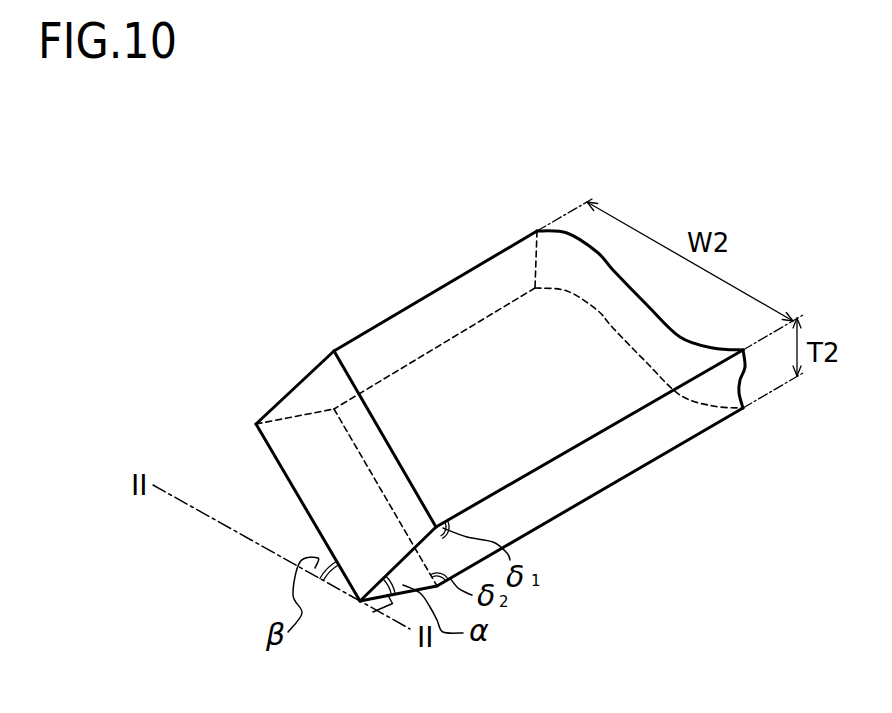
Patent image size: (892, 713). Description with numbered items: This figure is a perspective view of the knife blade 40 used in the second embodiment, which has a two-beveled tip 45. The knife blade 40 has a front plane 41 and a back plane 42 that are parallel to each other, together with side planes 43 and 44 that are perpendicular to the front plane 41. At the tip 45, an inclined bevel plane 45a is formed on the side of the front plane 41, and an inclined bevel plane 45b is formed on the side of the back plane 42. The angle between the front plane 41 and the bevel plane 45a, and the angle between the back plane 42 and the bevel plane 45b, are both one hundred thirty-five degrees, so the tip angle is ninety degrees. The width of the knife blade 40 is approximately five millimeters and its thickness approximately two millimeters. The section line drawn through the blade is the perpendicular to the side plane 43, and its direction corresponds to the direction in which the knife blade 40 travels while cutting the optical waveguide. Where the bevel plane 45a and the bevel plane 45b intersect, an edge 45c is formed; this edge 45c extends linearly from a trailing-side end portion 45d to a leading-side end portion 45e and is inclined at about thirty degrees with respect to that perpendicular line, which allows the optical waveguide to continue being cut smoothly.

The knife blade 40 is at (162, 204).
The front plane 41 is at (610, 398).
The back plane 42 is at (578, 492).
The side plane 43 is at (527, 512).
The side plane 44 is at (470, 310).
The tip 45 is at (317, 334).
The bevel plane 45a is at (325, 385).
The bevel plane 45b is at (297, 457).
The edge 45c is at (293, 490).
The trailing-side end portion 45d is at (360, 601).
The leading-side end portion 45e is at (256, 424).